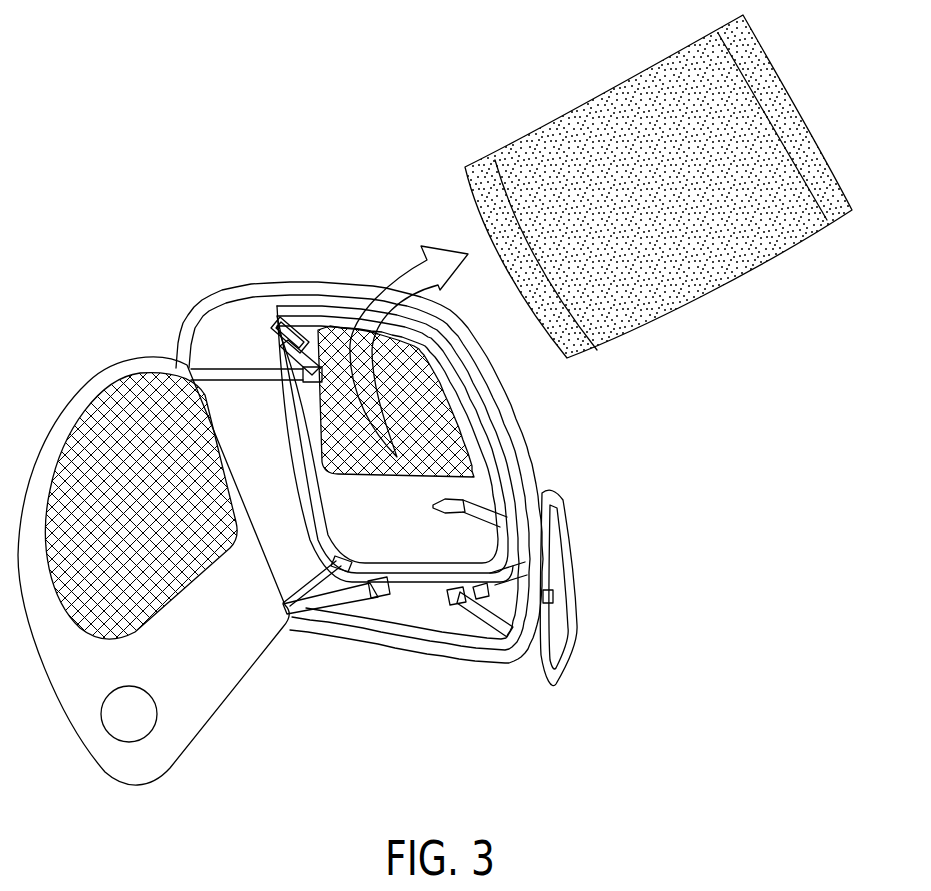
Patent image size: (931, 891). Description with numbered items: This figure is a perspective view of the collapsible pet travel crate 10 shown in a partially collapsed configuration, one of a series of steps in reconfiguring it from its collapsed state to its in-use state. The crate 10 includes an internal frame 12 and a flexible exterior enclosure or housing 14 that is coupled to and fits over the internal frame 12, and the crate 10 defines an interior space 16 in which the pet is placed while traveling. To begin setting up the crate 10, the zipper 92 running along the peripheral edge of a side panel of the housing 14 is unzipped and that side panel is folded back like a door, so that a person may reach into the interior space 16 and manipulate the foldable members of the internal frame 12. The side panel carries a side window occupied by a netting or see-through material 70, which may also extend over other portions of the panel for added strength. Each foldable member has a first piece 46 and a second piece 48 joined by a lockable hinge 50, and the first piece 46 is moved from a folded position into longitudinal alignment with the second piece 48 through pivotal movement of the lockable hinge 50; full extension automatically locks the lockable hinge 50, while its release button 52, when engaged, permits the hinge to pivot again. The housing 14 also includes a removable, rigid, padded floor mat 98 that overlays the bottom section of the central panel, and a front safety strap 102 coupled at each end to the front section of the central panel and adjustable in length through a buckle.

The crate 10 is at (373, 112).
The internal frame 12 is at (284, 332).
The housing 14 is at (523, 426).
The interior space 16 is at (414, 588).
The first piece 46 is at (223, 372).
The second piece 48 is at (298, 328).
The lockable hinge 50 is at (352, 323).
The release button 52 is at (473, 580).
The netting material 70 is at (76, 465).
The zipper 92 is at (190, 750).
The floor mat 98 is at (740, 243).
The safety strap 102 is at (578, 640).